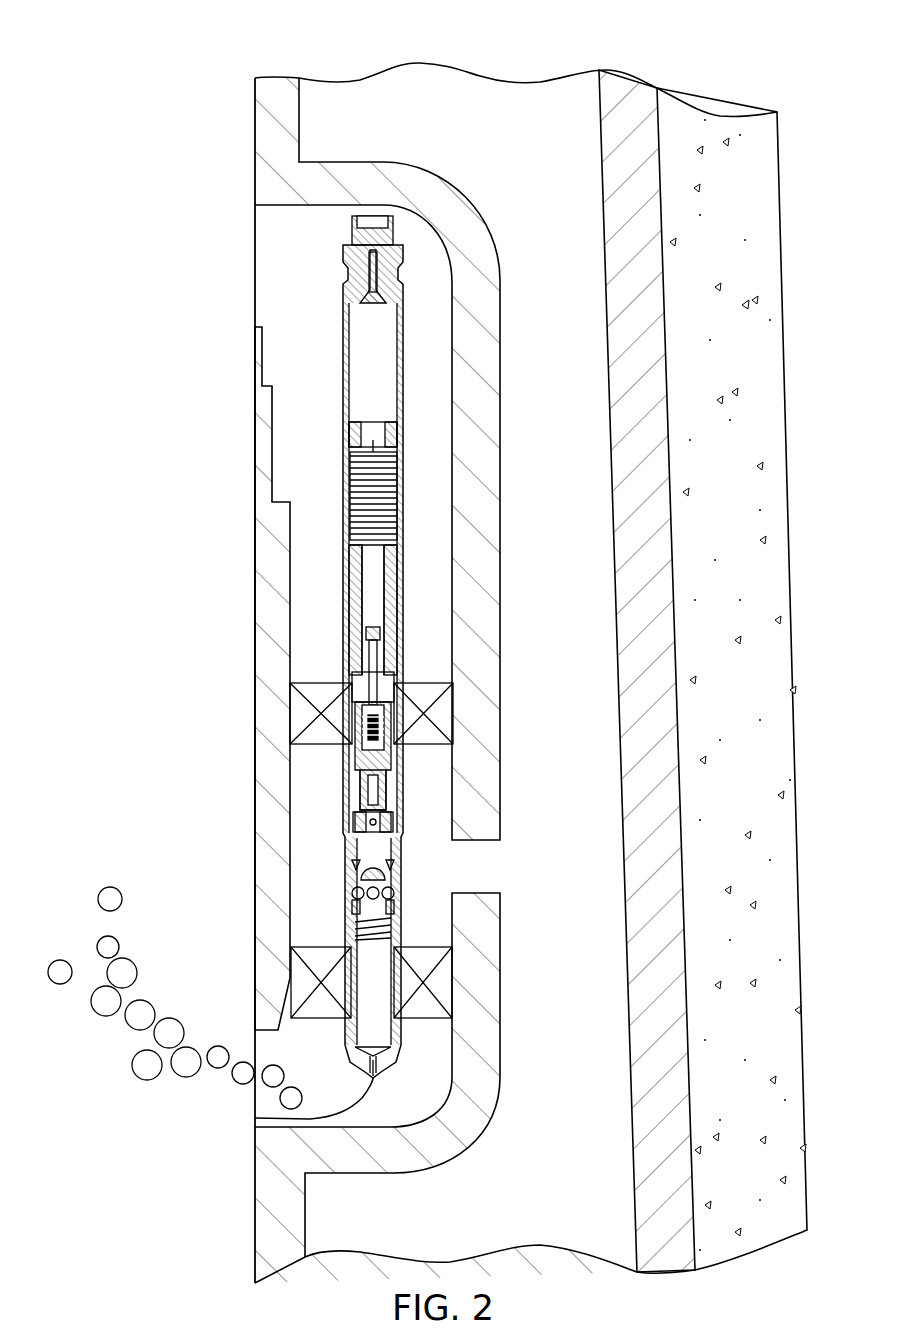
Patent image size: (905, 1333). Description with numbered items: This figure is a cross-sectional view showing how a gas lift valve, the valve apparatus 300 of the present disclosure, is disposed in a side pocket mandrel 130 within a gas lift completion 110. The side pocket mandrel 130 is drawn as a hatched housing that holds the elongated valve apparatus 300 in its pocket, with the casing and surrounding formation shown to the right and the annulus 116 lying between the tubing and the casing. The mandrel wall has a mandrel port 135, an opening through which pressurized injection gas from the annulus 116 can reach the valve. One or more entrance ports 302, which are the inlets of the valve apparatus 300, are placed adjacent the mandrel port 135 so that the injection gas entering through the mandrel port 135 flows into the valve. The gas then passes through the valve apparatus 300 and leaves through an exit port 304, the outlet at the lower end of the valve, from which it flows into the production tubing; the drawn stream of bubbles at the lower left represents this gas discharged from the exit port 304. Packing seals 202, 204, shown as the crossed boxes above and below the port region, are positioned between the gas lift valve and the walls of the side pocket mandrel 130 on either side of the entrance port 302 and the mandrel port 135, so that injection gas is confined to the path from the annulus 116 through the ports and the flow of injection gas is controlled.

The wellbore with casing and formation 110 is at (683, 84).
The annulus 116 is at (517, 127).
The side pocket mandrel 130 is at (487, 338).
The mandrel port 135 is at (462, 884).
The packing seal 202 is at (320, 690).
The packing seal 204 is at (451, 990).
The valve apparatus 300 is at (427, 587).
The entrance port 302 is at (398, 805).
The exit port 304 is at (260, 1118).